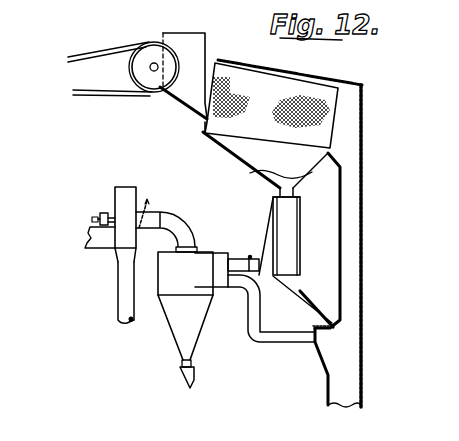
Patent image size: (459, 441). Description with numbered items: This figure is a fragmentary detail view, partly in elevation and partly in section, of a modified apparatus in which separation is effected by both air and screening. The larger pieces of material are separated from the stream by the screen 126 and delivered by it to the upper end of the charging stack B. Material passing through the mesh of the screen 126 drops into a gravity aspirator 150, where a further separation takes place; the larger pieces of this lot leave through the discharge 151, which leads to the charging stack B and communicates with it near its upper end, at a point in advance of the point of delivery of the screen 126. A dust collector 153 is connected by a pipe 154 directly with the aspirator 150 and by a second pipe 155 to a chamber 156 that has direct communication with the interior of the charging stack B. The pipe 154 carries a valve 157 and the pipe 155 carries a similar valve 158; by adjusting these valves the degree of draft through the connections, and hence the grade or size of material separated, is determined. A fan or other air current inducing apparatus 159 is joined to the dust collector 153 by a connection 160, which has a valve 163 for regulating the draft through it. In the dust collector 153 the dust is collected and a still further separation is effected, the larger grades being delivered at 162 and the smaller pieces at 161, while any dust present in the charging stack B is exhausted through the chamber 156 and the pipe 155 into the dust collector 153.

The screen 126 is at (318, 89).
The gravity aspirator 150 is at (284, 244).
The discharge 151 is at (312, 296).
The dust collector 153 is at (193, 309).
The pipe 154 is at (232, 259).
The second pipe 155 is at (252, 323).
The chamber 156 is at (323, 352).
The valve 157 is at (250, 255).
The valve 158 is at (307, 327).
The fan 159 is at (123, 187).
The connection 160 is at (173, 221).
The discharge for smaller pieces 161 is at (118, 308).
The discharge for larger grades 162 is at (190, 388).
The valve 163 is at (150, 200).
The charging stack B is at (360, 358).